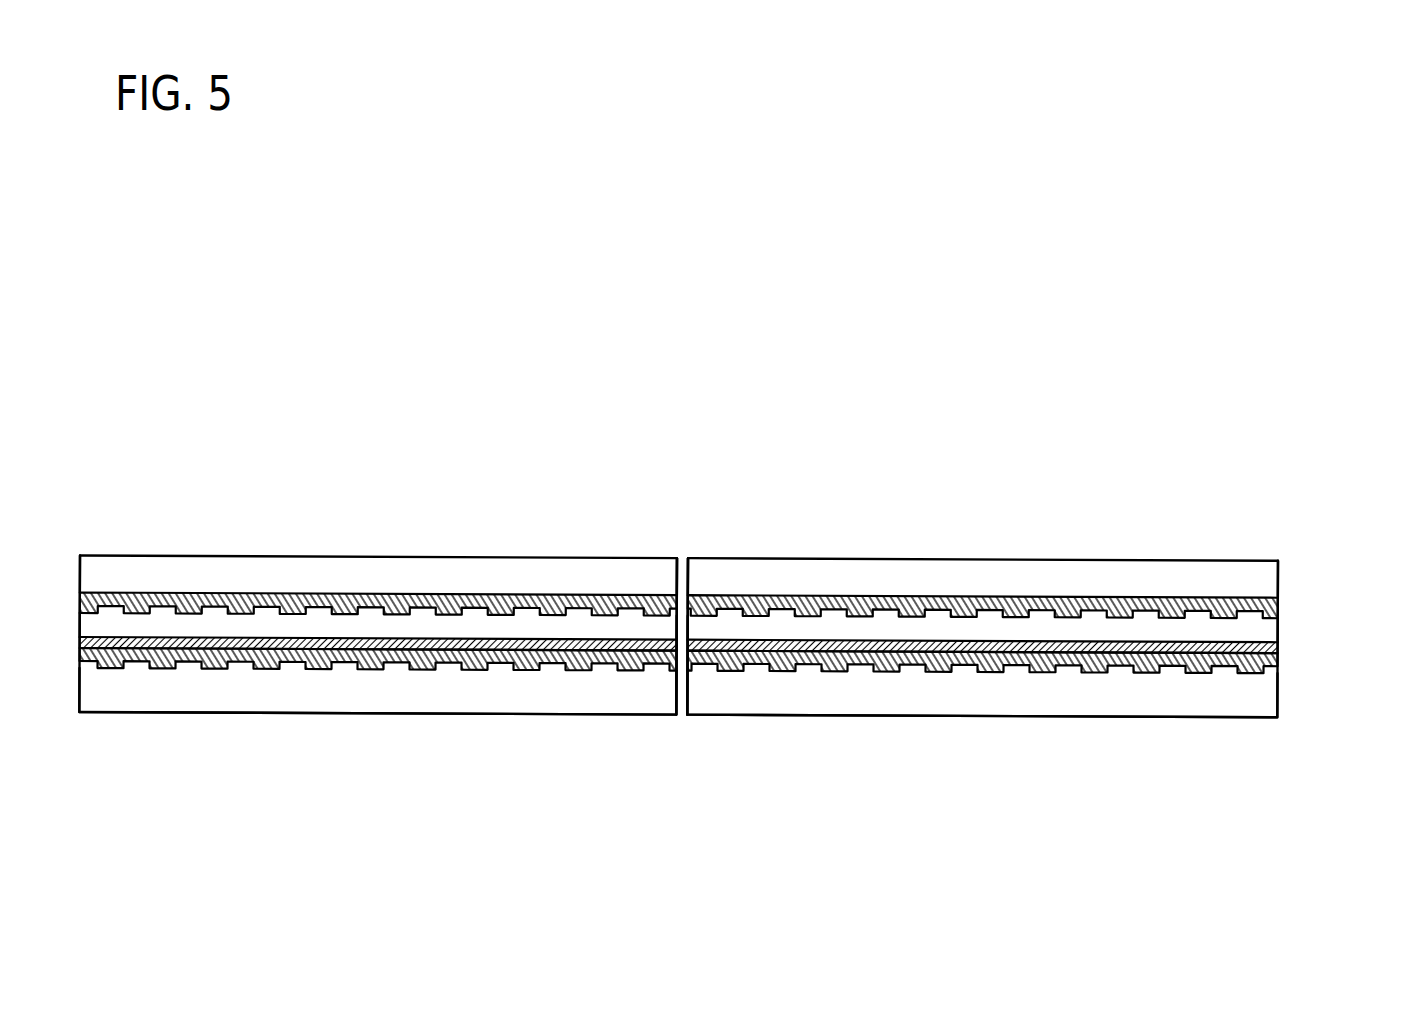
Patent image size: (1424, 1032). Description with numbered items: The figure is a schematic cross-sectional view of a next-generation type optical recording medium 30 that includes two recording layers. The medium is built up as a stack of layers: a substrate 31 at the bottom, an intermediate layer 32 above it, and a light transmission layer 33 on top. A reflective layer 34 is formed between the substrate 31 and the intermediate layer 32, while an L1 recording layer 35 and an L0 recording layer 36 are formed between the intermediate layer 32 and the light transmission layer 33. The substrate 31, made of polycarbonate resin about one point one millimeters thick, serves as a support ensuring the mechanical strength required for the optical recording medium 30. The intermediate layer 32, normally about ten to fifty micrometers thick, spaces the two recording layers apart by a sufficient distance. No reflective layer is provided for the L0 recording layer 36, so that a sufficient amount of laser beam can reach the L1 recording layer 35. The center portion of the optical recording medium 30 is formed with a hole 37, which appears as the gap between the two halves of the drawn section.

The optical recording medium 30 is at (1250, 312).
The substrate 31 is at (1260, 703).
The intermediate layer 32 is at (1265, 632).
The light transmission layer 33 is at (1136, 580).
The reflective layer 34 is at (1280, 663).
The L1 recording layer 35 is at (1280, 645).
The L0 recording layer 36 is at (1280, 605).
The hole 37 is at (683, 738).